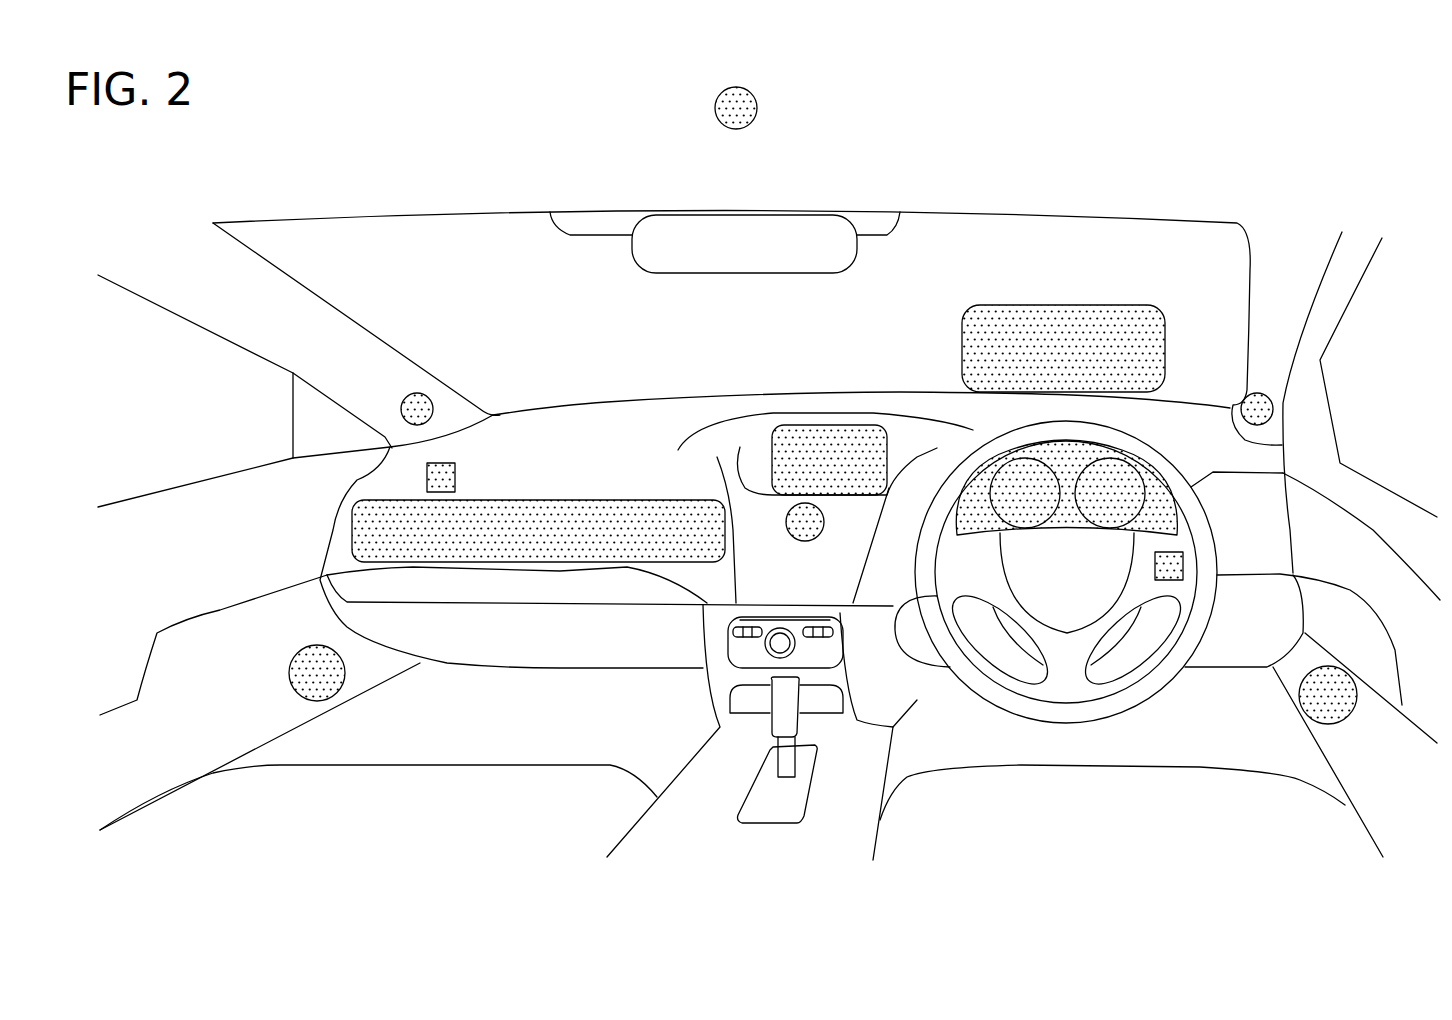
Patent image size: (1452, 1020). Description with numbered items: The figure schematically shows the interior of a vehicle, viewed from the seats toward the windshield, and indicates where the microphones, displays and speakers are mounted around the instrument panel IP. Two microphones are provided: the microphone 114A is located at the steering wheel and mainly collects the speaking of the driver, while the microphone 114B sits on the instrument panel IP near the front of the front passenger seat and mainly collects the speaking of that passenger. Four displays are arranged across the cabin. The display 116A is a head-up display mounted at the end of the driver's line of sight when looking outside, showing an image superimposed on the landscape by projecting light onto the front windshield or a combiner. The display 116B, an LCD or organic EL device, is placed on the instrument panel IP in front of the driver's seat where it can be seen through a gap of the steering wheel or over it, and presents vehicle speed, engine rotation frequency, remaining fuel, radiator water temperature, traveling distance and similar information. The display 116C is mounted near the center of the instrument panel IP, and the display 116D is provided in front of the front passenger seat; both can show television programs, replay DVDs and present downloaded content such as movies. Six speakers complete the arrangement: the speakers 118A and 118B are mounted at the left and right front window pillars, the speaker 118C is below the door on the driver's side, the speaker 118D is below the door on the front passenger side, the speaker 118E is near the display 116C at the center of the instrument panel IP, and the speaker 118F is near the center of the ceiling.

The instrument panel IP is at (585, 432).
The microphone 114A is at (1173, 580).
The microphone 114B is at (443, 462).
The display 116A is at (1062, 305).
The display 116B is at (1065, 528).
The display 116C is at (828, 424).
The display 116D is at (637, 500).
The speaker 118A is at (1257, 393).
The speaker 118B is at (420, 392).
The speaker 118C is at (1298, 693).
The speaker 118D is at (347, 673).
The speaker 118E is at (803, 541).
The speaker 118F is at (758, 106).